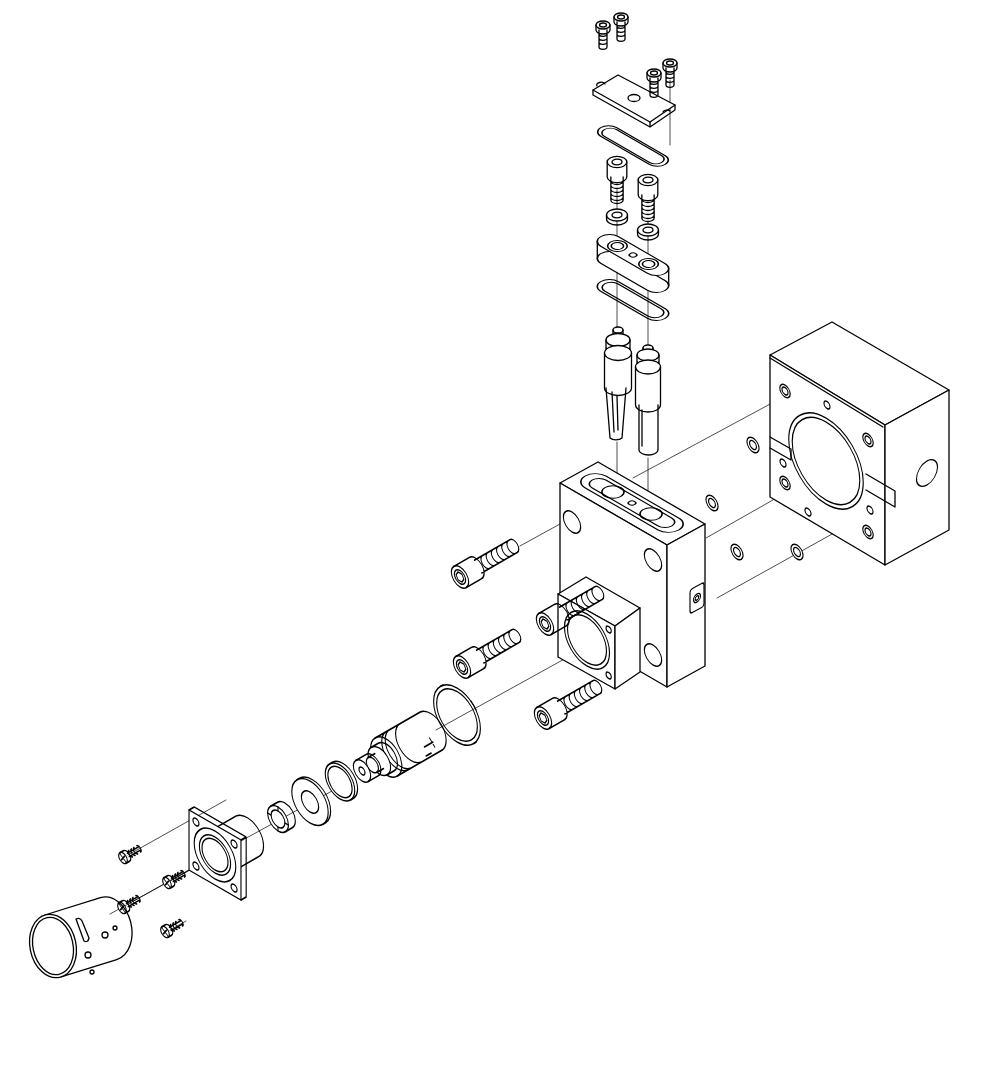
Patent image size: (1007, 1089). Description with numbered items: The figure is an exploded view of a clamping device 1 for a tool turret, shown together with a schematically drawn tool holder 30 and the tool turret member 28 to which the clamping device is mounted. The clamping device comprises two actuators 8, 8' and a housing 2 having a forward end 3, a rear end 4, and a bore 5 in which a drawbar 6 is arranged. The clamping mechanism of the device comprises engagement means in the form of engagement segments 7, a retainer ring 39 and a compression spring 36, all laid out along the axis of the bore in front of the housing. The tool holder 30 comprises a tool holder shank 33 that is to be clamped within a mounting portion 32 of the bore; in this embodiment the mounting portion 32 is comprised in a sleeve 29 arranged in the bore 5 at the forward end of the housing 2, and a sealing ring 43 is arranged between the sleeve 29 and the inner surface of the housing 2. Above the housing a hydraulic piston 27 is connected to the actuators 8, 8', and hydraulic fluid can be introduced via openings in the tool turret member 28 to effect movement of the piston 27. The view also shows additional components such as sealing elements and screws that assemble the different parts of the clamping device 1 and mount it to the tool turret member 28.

The clamping device 1 is at (396, 284).
The housing 2 is at (558, 487).
The forward end 3 is at (623, 697).
The rear end 4 is at (730, 623).
The bore 5 is at (604, 637).
The drawbar 6 is at (388, 778).
The engagement segments 7 is at (287, 835).
The actuator 8 is at (680, 400).
The actuator 8' is at (590, 382).
The hydraulic piston 27 is at (600, 262).
The tool turret member 28 is at (818, 342).
The sleeve 29 is at (192, 812).
The tool holder 30 is at (82, 968).
The mounting portion 32 is at (217, 863).
The tool holder shank 33 is at (98, 908).
The compression spring 36 is at (337, 762).
The retainer ring 39 is at (300, 790).
The sealing ring 43 is at (460, 744).